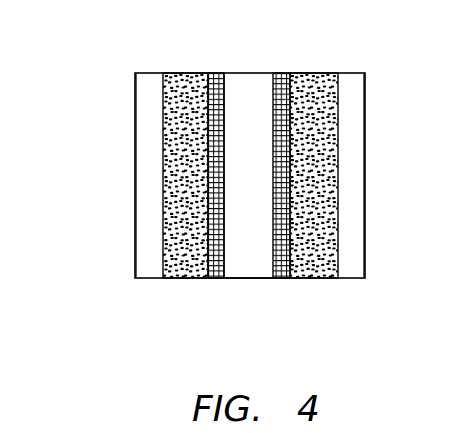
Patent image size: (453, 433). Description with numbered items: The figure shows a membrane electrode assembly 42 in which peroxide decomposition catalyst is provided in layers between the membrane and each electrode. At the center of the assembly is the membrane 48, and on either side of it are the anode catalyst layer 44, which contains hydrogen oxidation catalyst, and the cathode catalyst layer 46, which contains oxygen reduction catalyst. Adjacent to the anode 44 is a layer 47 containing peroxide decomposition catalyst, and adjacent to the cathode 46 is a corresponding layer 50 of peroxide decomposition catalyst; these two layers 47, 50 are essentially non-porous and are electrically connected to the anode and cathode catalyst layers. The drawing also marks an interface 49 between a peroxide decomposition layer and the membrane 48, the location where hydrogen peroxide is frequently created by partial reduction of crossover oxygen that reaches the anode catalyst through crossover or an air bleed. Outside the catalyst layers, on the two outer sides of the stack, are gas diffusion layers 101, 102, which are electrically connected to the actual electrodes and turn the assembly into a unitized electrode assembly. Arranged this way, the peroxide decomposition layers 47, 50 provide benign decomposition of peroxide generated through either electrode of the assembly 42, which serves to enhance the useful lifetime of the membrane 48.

The membrane electrode assembly 42 is at (100, 121).
The anode catalyst layer 44 is at (163, 91).
The cathode catalyst layer 46 is at (338, 90).
The layer containing peroxide decomposition catalyst 47 is at (215, 72).
The membrane 48 is at (248, 249).
The interface 49 is at (225, 180).
The layer of peroxide decomposition catalyst 50 is at (281, 72).
The anode current collector 101 is at (153, 72).
The gas diffusion layer 102 is at (350, 72).